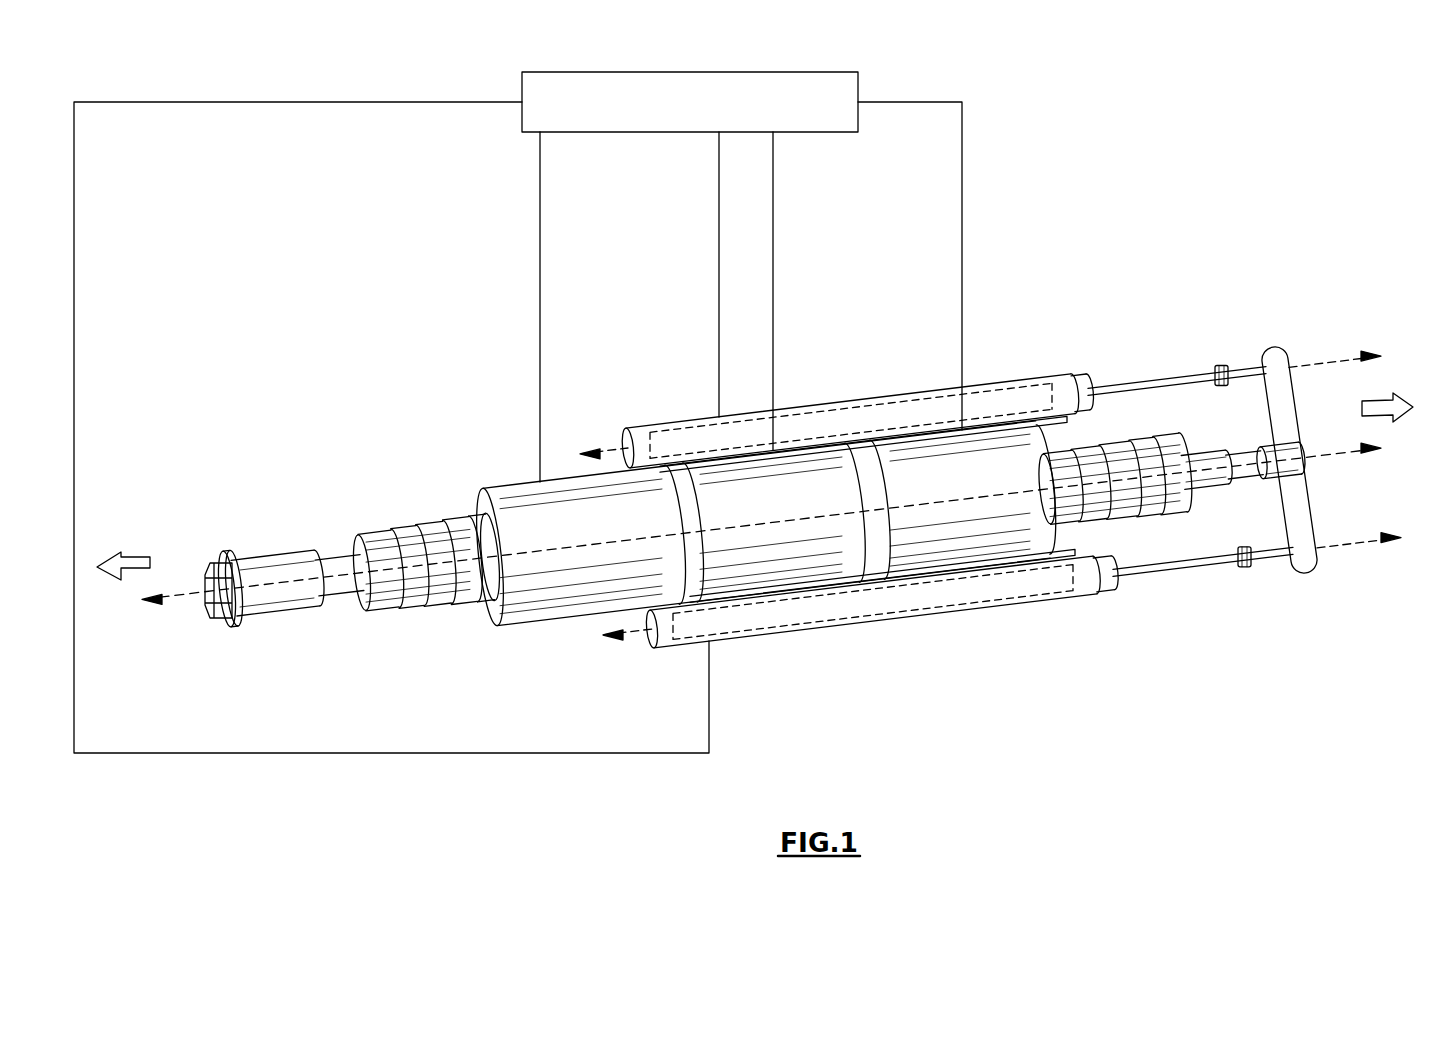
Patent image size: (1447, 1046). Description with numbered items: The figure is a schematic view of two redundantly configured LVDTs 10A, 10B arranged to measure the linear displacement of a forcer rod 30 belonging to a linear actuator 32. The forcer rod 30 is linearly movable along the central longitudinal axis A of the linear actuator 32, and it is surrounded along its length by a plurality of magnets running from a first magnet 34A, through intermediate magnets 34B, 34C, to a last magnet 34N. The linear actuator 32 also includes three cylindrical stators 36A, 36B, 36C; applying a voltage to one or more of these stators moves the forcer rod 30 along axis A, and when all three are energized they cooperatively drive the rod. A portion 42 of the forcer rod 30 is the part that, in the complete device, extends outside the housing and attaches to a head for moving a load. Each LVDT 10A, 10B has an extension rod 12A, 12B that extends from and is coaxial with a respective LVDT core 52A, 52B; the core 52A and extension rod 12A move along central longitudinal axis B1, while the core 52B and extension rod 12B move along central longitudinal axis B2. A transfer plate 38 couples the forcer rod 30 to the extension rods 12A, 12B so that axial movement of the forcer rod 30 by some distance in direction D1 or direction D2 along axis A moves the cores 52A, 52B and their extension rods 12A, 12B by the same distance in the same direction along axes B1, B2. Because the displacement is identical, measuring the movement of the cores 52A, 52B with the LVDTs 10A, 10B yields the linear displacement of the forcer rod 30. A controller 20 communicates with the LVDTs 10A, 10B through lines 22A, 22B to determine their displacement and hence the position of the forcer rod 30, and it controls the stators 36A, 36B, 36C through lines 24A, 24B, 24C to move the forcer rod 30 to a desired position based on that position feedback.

The controller 20 is at (818, 132).
The line 22A is at (719, 225).
The line 22B is at (330, 102).
The line 24A is at (540, 285).
The line 24B is at (773, 252).
The line 24C is at (962, 225).
The LVDT 10A is at (1049, 376).
The LVDT 10B is at (958, 611).
The extension rod 12A is at (1146, 385).
The extension rod 12B is at (1156, 571).
The LVDT core 52A is at (882, 398).
The LVDT core 52B is at (846, 618).
The forcer rod 30 is at (1210, 486).
The linear actuator 32 is at (505, 437).
The first magnet 34A is at (362, 536).
The magnet 34B is at (395, 531).
The magnet 34C is at (421, 527).
The last magnet 34N is at (1172, 436).
The stator 36A is at (550, 585).
The stator 36B is at (718, 560).
The stator 36C is at (1000, 520).
The transfer plate 38 is at (1296, 407).
The portion of the forcer rod 42 is at (277, 630).
The central longitudinal axis A is at (1337, 451).
The central longitudinal axis B1 is at (607, 452).
The central longitudinal axis B2 is at (636, 636).
The direction D1 is at (131, 552).
The direction D2 is at (1400, 397).